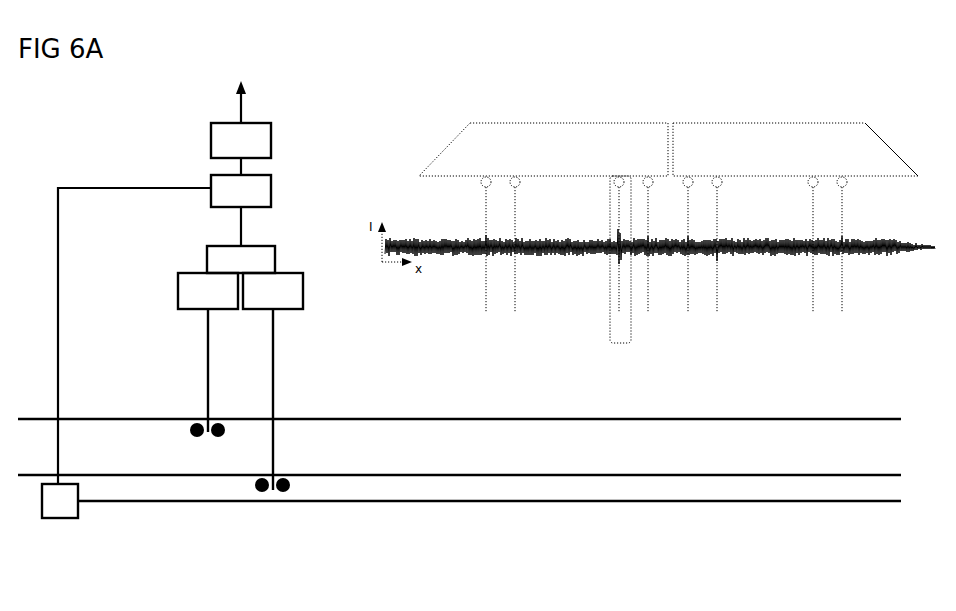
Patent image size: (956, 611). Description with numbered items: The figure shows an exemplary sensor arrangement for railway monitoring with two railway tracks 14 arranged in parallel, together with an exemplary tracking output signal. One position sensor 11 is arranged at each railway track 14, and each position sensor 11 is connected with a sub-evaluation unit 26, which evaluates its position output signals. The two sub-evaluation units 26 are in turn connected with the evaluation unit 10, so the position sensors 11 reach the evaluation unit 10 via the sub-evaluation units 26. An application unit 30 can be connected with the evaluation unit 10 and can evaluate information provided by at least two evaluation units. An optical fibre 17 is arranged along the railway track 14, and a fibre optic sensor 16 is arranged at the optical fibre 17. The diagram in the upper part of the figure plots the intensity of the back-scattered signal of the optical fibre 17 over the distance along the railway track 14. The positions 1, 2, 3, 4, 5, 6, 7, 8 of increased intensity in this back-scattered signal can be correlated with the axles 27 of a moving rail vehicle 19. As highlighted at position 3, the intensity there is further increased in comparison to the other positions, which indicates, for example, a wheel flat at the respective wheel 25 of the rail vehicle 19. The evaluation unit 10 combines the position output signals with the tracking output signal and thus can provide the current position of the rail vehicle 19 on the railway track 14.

The application unit 30 is at (210, 137).
The evaluation unit 10 is at (272, 189).
The sub-evaluation unit 26 is at (236, 310).
The fibre optic sensor 16 is at (60, 519).
The position sensor 11 is at (210, 434).
The railway track 14 is at (851, 473).
The optical fibre 17 is at (863, 503).
The rail vehicle 19 is at (452, 142).
The axle 27 is at (480, 186).
The wheel 25 is at (614, 186).
The position 1 is at (486, 261).
The position 2 is at (515, 261).
The position 3 is at (620, 259).
The position 4 is at (648, 261).
The position 5 is at (688, 261).
The position 6 is at (717, 261).
The position 7 is at (813, 261).
The position 8 is at (842, 261).